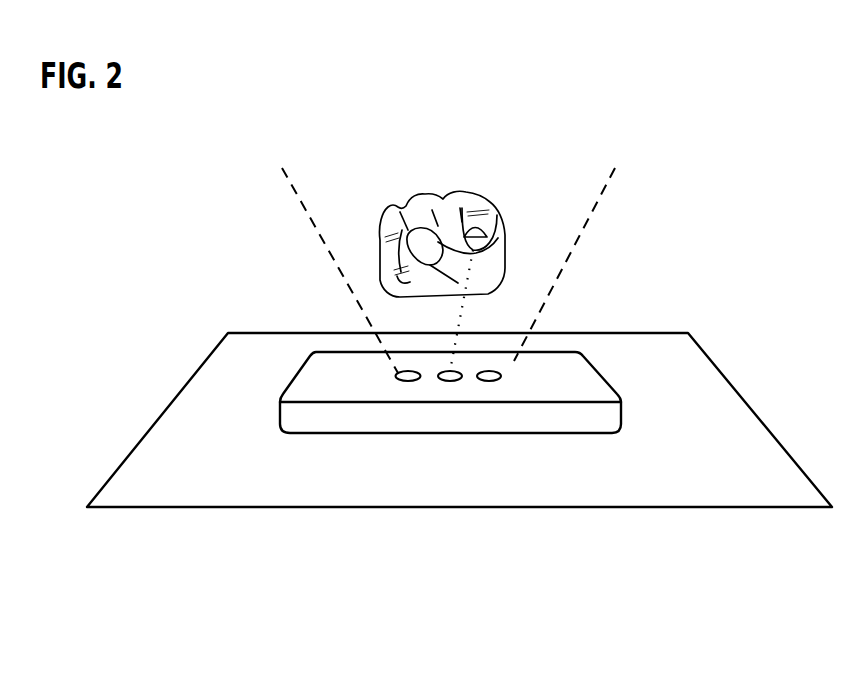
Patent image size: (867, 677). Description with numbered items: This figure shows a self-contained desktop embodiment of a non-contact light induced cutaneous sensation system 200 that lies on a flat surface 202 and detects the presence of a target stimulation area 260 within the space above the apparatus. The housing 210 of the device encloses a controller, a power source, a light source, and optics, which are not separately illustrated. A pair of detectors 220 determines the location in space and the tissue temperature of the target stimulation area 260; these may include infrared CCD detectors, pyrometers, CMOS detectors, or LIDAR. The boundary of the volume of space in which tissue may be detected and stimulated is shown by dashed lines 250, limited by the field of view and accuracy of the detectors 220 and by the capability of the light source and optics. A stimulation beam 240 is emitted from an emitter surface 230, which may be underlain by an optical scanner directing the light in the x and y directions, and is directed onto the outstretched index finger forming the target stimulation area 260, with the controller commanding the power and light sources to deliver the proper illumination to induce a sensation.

The non-contact light induced cutaneous sensation system 200 is at (651, 297).
The flat surface 202 is at (165, 433).
The housing 210 is at (295, 390).
The detectors 220 is at (405, 381).
The emitter surface 230 is at (452, 383).
The stimulation beam 240 is at (460, 323).
The dashed lines 250 is at (597, 200).
The target stimulation area 260 is at (446, 192).